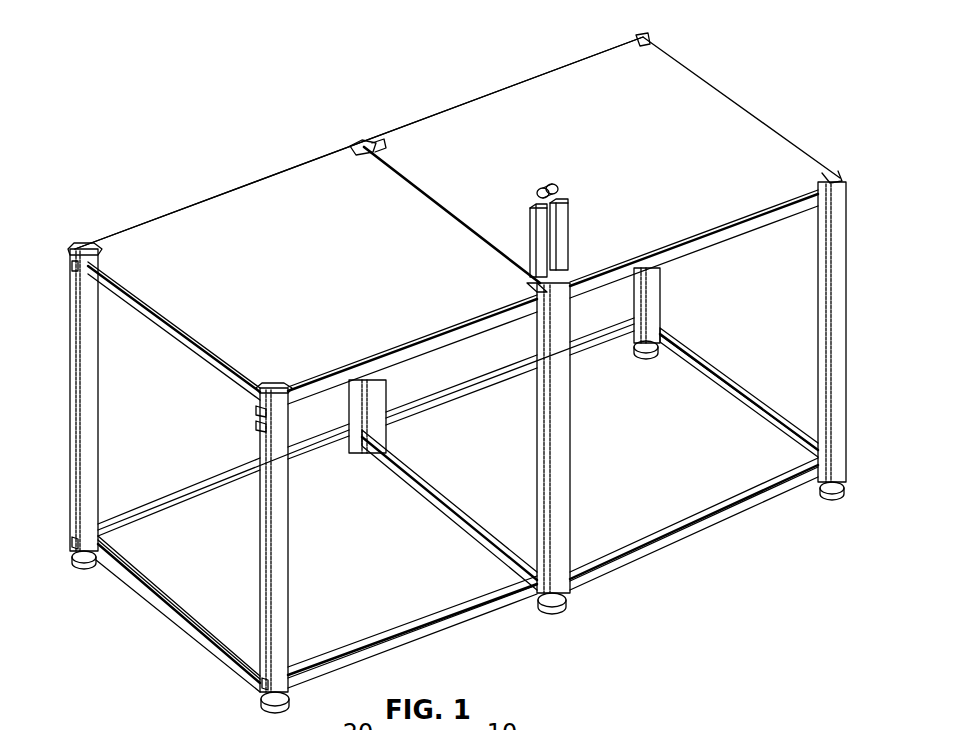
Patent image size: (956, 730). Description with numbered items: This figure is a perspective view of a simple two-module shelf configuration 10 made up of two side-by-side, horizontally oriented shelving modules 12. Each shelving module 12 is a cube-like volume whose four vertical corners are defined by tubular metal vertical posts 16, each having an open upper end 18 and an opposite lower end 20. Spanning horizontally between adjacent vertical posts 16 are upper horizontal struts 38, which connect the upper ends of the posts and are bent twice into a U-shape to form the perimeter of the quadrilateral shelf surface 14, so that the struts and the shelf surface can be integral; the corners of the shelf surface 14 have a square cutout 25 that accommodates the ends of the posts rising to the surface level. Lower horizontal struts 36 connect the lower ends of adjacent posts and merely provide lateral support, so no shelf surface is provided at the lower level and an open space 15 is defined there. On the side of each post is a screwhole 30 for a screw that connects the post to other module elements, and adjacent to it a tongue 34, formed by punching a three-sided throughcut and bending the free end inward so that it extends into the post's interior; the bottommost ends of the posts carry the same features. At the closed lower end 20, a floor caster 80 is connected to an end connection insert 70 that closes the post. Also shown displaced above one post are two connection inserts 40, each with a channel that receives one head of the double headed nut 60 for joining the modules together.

The configuration 10 is at (145, 133).
The shelving module 12 is at (237, 191).
The quadrilateral shelf surface 14 is at (206, 252).
The open space 15 is at (218, 574).
The vertical post 16 is at (86, 380).
The upper end of post 18 is at (264, 388).
The lower end of post 20 is at (850, 498).
The square cutout 25 is at (76, 249).
The screwhole 30 is at (258, 413).
The tongue 34 is at (258, 429).
The lower horizontal strut 36 is at (127, 518).
The upper horizontal strut 38 is at (135, 314).
The connection insert 40 is at (528, 243).
The double headed nut 60 is at (548, 184).
The end connection insert 70 is at (75, 552).
The floor caster 80 is at (268, 708).